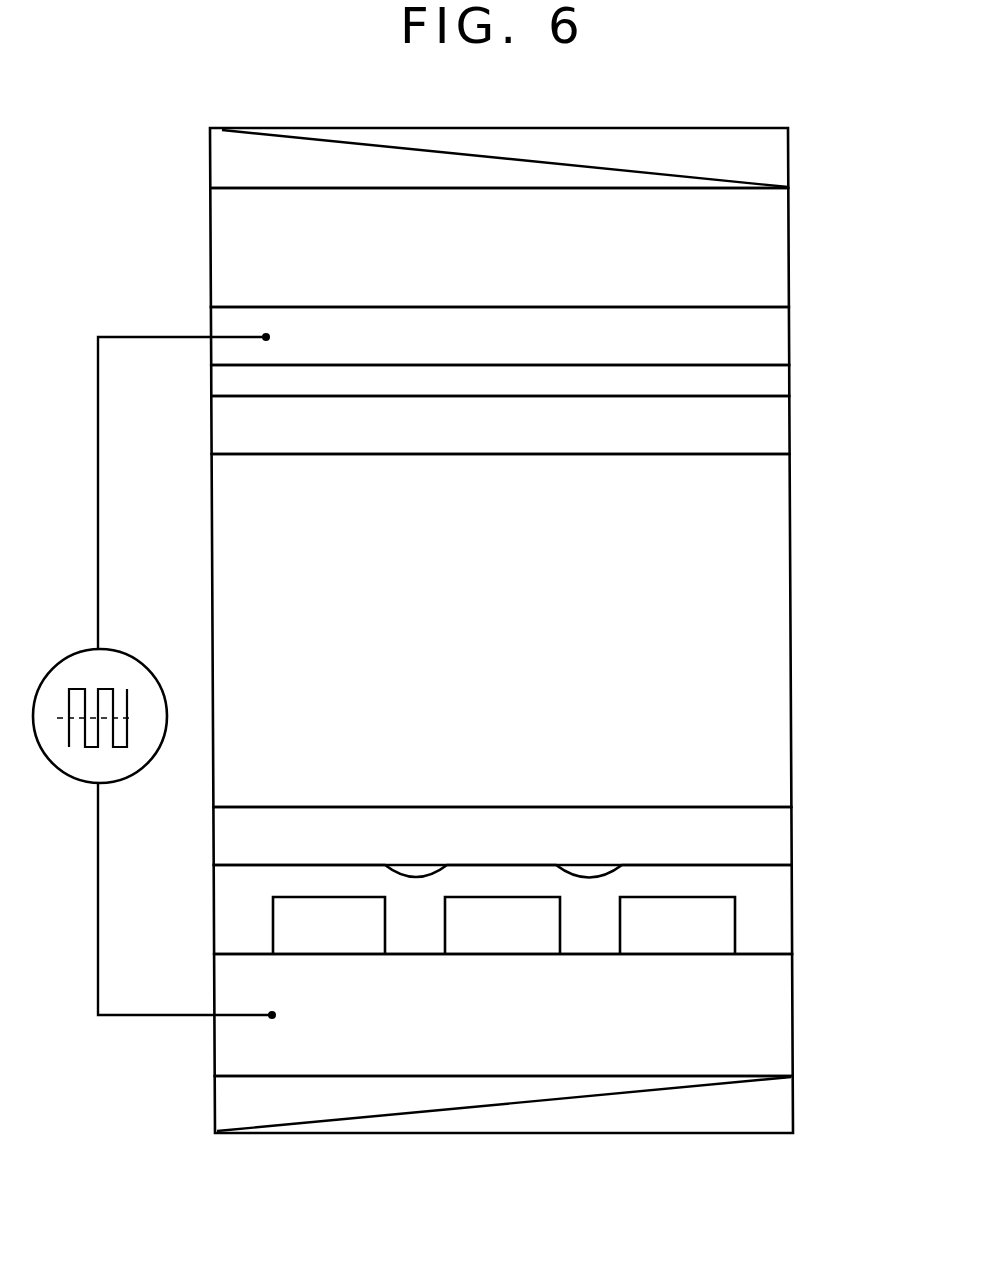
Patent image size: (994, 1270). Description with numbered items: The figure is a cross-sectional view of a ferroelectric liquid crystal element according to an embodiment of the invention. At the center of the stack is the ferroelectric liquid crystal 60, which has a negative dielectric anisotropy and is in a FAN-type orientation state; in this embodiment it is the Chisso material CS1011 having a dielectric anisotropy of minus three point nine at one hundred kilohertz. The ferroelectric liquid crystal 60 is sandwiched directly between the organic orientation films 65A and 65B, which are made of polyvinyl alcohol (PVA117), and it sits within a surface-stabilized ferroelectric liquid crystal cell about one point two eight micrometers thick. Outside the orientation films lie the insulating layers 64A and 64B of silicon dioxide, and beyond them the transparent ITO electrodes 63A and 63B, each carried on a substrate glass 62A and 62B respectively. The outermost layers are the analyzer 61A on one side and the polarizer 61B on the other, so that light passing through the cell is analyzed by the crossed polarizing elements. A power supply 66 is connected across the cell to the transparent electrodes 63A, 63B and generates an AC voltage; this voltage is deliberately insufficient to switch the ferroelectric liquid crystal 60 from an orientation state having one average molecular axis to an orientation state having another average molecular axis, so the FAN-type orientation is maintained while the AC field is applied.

The analyzer 61A is at (776, 154).
The substrate glass 62A is at (773, 246).
The transparent electrode 63A is at (775, 340).
The insulating layer 64A is at (780, 380).
The organic orientation film 65A is at (778, 421).
The ferroelectric liquid crystal 60 is at (776, 497).
The organic orientation film 65B is at (783, 836).
The insulating layer 64B is at (780, 915).
The transparent electrode 63B is at (715, 935).
The substrate glass 62B is at (767, 1028).
The polarizer 61B is at (770, 1108).
The power supply 66 is at (120, 765).